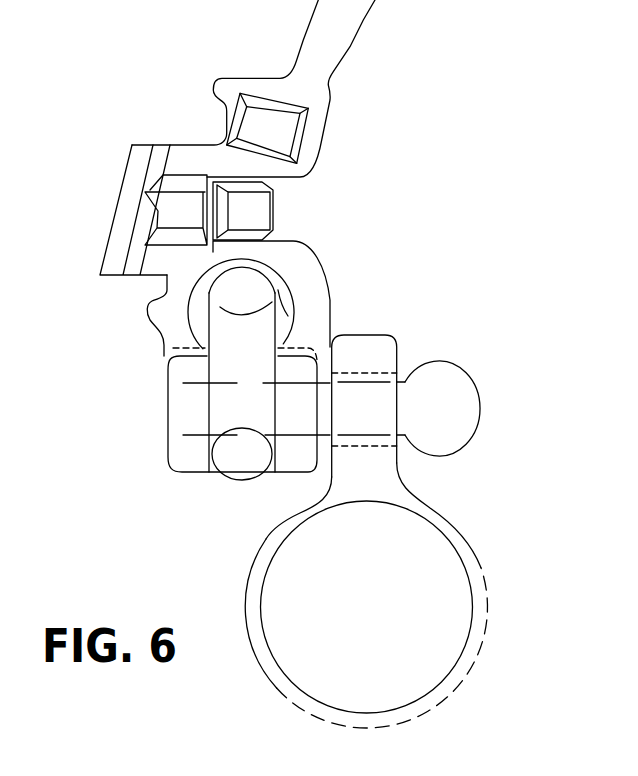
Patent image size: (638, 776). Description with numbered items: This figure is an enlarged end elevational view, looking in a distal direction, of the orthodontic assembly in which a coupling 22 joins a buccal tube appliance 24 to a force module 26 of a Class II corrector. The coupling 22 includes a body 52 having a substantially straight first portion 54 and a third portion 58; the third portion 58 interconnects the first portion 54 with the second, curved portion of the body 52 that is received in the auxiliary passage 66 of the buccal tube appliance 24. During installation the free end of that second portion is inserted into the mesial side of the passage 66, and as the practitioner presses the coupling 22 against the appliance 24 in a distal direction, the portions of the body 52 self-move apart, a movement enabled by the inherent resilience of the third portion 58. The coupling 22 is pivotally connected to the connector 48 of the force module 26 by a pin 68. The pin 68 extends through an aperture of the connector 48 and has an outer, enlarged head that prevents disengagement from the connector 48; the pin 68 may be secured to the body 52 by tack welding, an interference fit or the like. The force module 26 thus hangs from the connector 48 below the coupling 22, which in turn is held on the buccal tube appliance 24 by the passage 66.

The coupling 22 is at (196, 424).
The buccal tube appliance 24 is at (320, 251).
The force module 26 is at (230, 592).
The connector 48 is at (372, 353).
The body 52 is at (160, 471).
The first portion 54 is at (183, 411).
The third portion 58 is at (167, 356).
The auxiliary passage 66 is at (300, 317).
The pin 68 is at (453, 440).